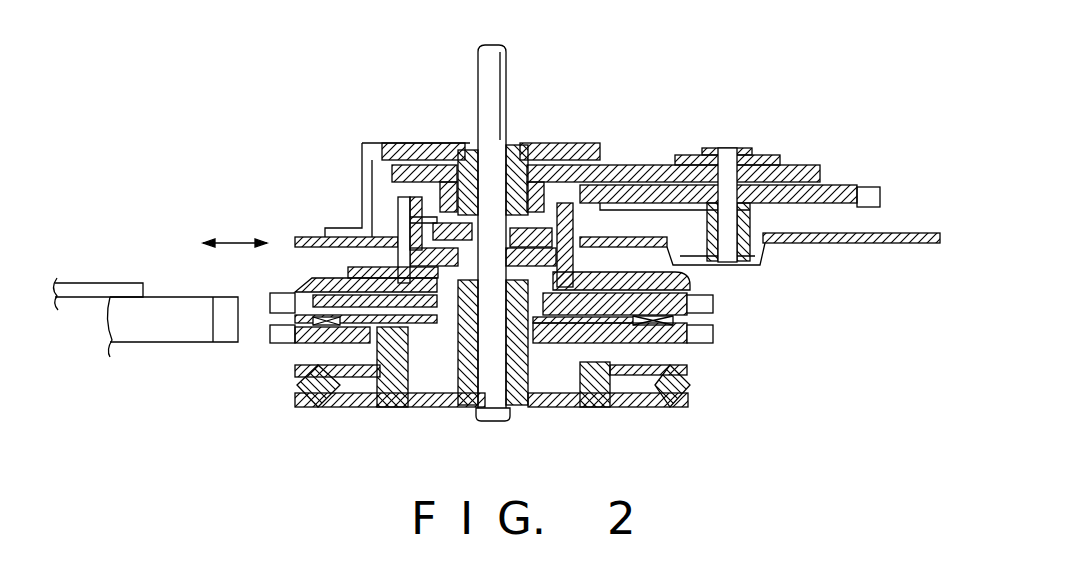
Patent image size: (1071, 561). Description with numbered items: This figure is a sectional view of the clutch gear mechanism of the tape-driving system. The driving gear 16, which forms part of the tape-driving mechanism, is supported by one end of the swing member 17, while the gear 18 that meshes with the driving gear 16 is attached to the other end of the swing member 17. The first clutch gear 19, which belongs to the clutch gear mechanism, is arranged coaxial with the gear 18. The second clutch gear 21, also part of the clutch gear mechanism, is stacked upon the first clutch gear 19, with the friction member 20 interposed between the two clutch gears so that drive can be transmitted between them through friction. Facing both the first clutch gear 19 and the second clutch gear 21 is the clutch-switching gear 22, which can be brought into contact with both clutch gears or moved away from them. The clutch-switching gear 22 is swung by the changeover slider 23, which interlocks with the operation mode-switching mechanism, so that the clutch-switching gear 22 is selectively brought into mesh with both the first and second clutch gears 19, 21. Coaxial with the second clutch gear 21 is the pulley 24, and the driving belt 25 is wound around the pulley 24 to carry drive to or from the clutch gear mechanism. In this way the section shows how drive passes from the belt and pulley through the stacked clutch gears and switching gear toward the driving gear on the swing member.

The driving gear 16 is at (870, 197).
The swing member 17 is at (631, 165).
The gear 18 is at (392, 215).
The first clutch gear 19 is at (716, 298).
The friction member 20 is at (705, 319).
The second clutch gear 21 is at (700, 343).
The clutch-switching gear 22 is at (180, 297).
The changeover slider 23 is at (88, 283).
The pulley 24 is at (313, 408).
The driving belt 25 is at (297, 385).